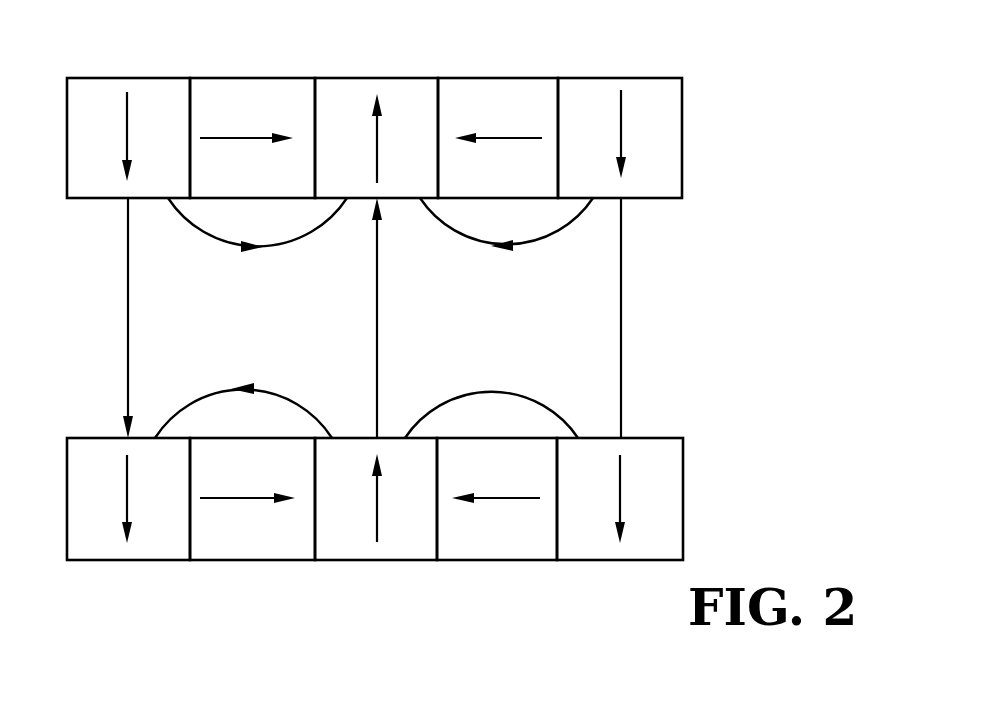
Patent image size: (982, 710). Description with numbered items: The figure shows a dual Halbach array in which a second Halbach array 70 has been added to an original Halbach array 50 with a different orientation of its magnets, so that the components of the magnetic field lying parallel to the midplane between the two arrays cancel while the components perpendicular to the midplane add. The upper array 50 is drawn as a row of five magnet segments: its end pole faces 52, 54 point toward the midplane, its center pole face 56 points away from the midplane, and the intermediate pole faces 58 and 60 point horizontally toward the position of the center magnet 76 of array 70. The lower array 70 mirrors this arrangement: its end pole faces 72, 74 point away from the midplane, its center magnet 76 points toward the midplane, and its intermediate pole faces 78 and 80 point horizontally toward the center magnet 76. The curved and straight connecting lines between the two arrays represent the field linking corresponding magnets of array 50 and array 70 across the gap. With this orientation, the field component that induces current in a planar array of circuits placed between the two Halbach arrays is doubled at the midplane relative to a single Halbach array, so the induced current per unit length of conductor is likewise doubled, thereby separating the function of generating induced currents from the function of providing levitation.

The array 50 is at (712, 148).
The pole face 52 is at (140, 76).
The pole face 54 is at (626, 76).
The pole face 56 is at (375, 76).
The pole face 58 is at (258, 76).
The pole face 60 is at (505, 76).
The array 70 is at (712, 510).
The pole face 72 is at (150, 562).
The pole face 74 is at (625, 562).
The center magnet 76 is at (380, 562).
The pole face 78 is at (255, 562).
The pole face 80 is at (505, 562).